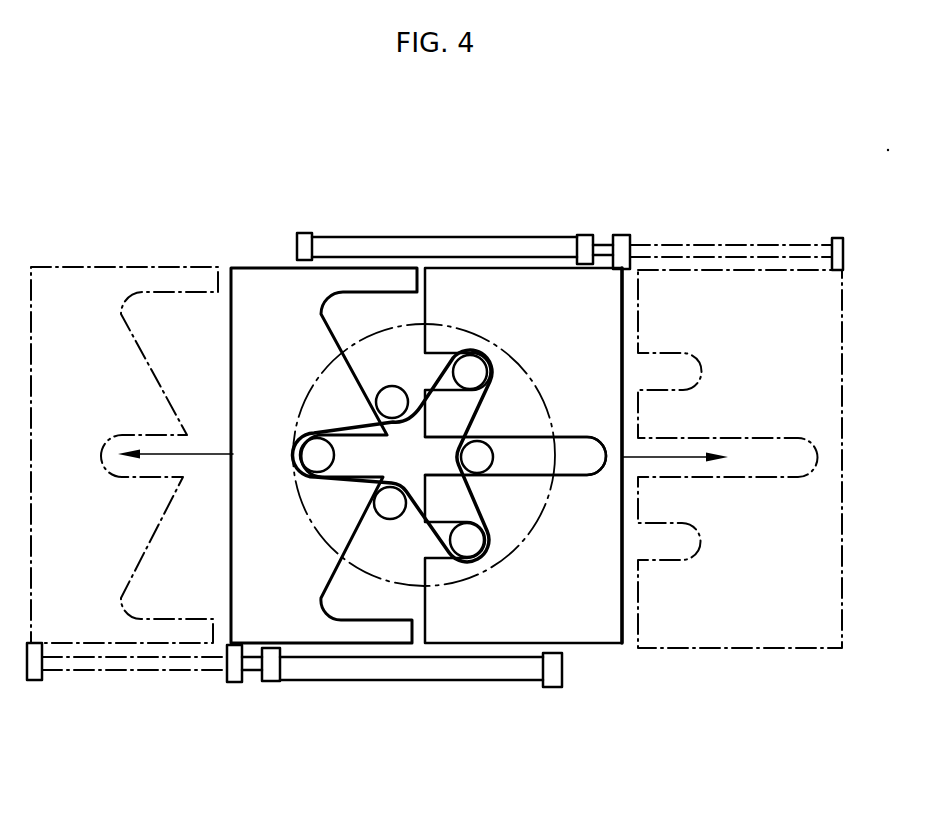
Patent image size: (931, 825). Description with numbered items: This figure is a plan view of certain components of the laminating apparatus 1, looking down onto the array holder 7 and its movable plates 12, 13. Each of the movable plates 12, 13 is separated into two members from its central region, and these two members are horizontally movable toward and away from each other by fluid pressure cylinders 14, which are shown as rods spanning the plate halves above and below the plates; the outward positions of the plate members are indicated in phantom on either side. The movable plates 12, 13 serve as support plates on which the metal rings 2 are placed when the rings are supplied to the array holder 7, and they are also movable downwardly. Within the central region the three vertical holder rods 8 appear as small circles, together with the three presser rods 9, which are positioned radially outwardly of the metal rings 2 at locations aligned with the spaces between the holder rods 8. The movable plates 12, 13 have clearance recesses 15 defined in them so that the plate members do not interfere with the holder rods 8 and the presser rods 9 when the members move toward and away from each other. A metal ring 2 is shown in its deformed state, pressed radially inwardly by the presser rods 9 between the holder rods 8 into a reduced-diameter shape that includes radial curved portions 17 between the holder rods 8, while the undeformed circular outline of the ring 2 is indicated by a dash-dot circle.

The laminating apparatus 1 is at (772, 136).
The metal ring 2 is at (522, 547).
The array holder 7 is at (425, 456).
The holder rod 8 is at (313, 454).
The presser rod 9 is at (392, 402).
The movable plate 12 is at (98, 614).
The movable plate 13 is at (598, 627).
The fluid pressure cylinder 14 is at (504, 236).
The clearance recess 15 is at (353, 312).
The radial curved portion 17 is at (310, 430).